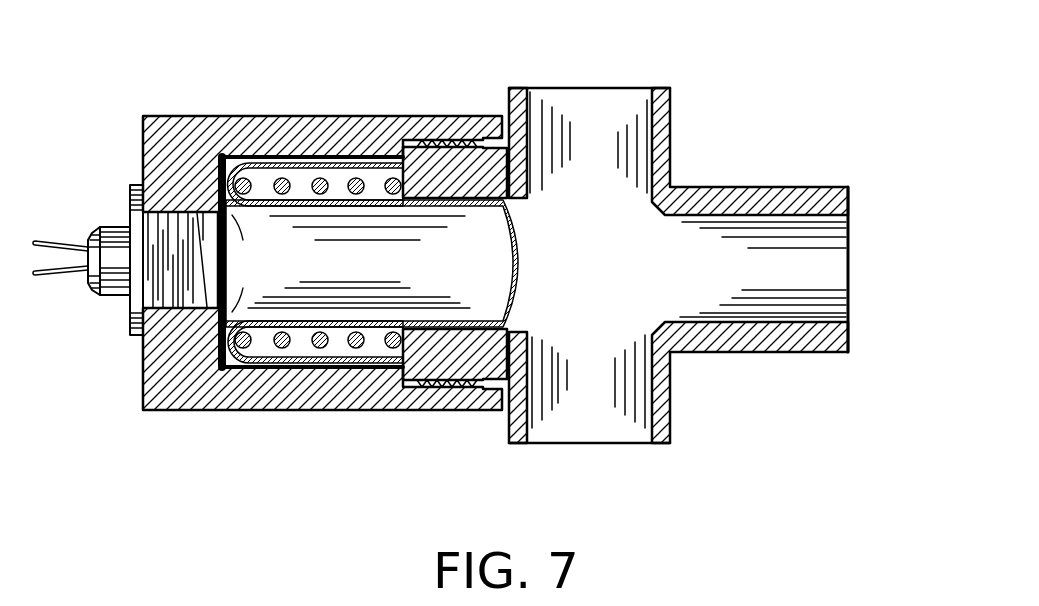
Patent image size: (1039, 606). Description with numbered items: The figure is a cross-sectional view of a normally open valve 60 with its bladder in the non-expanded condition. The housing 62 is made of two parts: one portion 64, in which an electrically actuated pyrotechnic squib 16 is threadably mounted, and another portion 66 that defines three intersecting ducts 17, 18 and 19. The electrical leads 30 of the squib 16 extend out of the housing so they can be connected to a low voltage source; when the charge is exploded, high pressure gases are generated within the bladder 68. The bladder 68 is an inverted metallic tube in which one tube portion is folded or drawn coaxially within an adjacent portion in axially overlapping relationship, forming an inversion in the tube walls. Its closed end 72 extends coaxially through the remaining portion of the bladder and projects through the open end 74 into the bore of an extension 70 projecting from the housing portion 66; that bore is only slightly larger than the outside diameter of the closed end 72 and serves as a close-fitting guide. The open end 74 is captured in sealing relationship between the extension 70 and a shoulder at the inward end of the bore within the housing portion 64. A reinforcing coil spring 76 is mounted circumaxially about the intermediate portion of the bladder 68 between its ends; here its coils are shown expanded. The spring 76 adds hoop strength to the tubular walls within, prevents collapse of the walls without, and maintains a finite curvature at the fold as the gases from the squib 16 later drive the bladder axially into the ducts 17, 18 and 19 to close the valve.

The valve 60 is at (146, 84).
The housing 62 is at (321, 112).
The housing portion 64 is at (278, 115).
The extension 70 is at (468, 167).
The open end of the bladder 74 is at (363, 168).
The bladder 68 is at (258, 214).
The reinforcing coil spring 76 is at (340, 322).
The closed end of the bladder 72 is at (519, 268).
The squib 16 is at (115, 225).
The electrical leads 30 is at (72, 247).
The duct 17 is at (668, 108).
The duct 18 is at (668, 404).
The housing portion 66 is at (672, 160).
The duct 19 is at (737, 187).